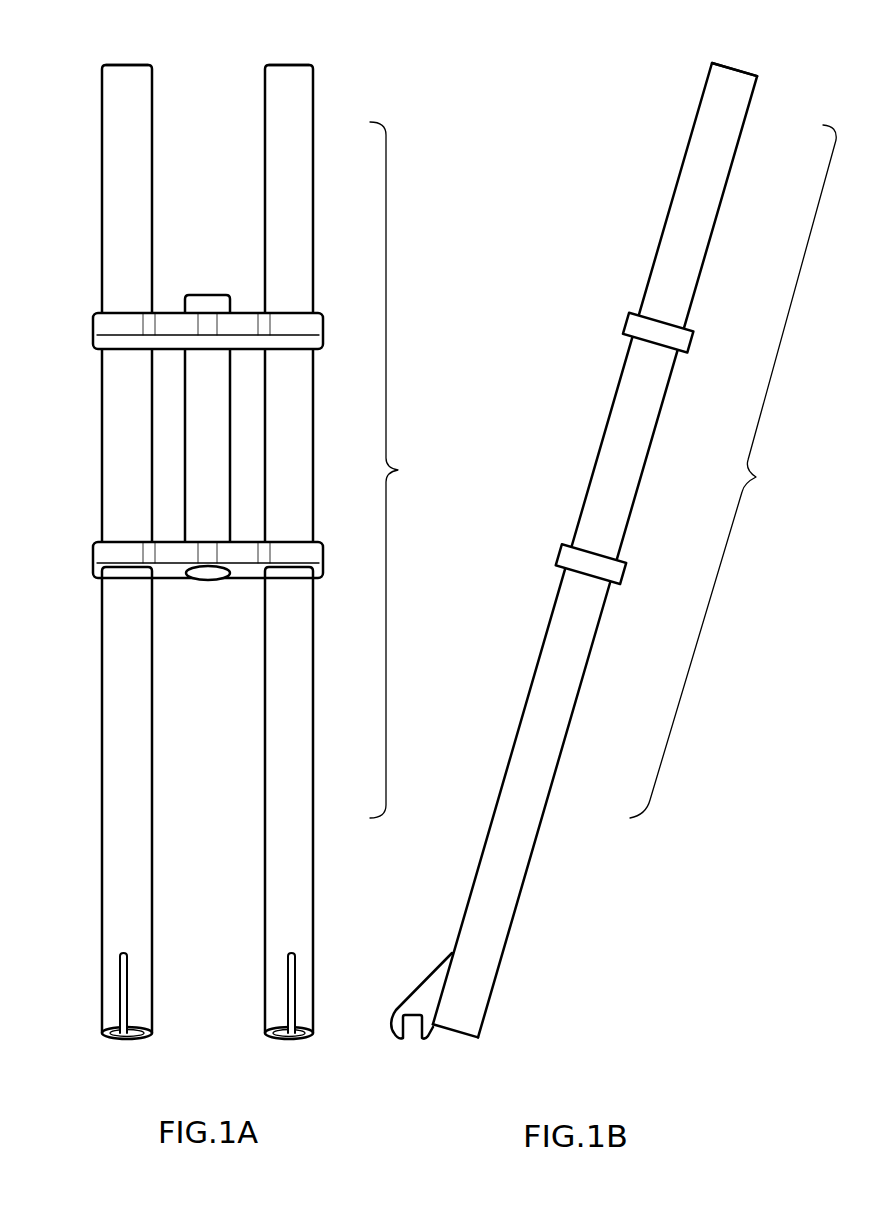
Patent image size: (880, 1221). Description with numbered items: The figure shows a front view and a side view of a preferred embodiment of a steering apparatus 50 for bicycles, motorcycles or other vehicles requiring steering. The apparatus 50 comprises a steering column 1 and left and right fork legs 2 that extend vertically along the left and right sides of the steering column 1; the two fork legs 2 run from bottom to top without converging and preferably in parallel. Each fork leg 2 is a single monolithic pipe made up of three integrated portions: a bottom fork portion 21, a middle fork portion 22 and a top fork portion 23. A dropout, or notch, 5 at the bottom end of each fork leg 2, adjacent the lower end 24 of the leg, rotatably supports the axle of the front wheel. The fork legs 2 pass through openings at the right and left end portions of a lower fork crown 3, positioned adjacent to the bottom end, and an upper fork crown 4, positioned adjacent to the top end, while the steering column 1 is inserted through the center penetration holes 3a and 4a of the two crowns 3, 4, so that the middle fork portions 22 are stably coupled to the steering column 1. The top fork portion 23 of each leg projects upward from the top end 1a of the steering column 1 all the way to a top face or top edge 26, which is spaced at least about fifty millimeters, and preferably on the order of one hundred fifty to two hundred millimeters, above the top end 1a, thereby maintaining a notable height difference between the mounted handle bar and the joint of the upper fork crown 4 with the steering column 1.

In FIG. 1A, the steering column 1 is at (193, 412).
In FIG. 1A, the top end of the steering column 1a is at (203, 294).
In FIG. 1A, the fork leg 2 is at (394, 470).
In FIG. 1B, the fork leg 2 is at (733, 471).
In FIG. 1A, the lower fork crown 3 is at (94, 565).
In FIG. 1B, the lower fork crown 3 is at (628, 570).
In FIG. 1A, the penetration hole 3a is at (207, 580).
In FIG. 1A, the upper fork crown 4 is at (94, 332).
In FIG. 1B, the upper fork crown 4 is at (695, 341).
In FIG. 1A, the penetration hole 4a is at (233, 313).
In FIG. 1A, the dropout 5 is at (120, 998).
In FIG. 1B, the dropout 5 is at (413, 1045).
In FIG. 1A, the bottom fork portion 21 is at (112, 778).
In FIG. 1B, the bottom fork portion 21 is at (545, 778).
In FIG. 1A, the middle fork portion 22 is at (112, 480).
In FIG. 1B, the middle fork portion 22 is at (636, 479).
In FIG. 1A, the top fork portion 23 is at (112, 148).
In FIG. 1B, the top fork portion 23 is at (722, 147).
In FIG. 1A, the tube bottom end 24 is at (110, 1037).
In FIG. 1B, the tube bottom end 24 is at (474, 1042).
In FIG. 1A, the top face 26 is at (127, 63).
In FIG. 1B, the top face 26 is at (735, 69).
In FIG. 1A, the steering apparatus 50 is at (36, 406).
In FIG. 1B, the steering apparatus 50 is at (815, 405).